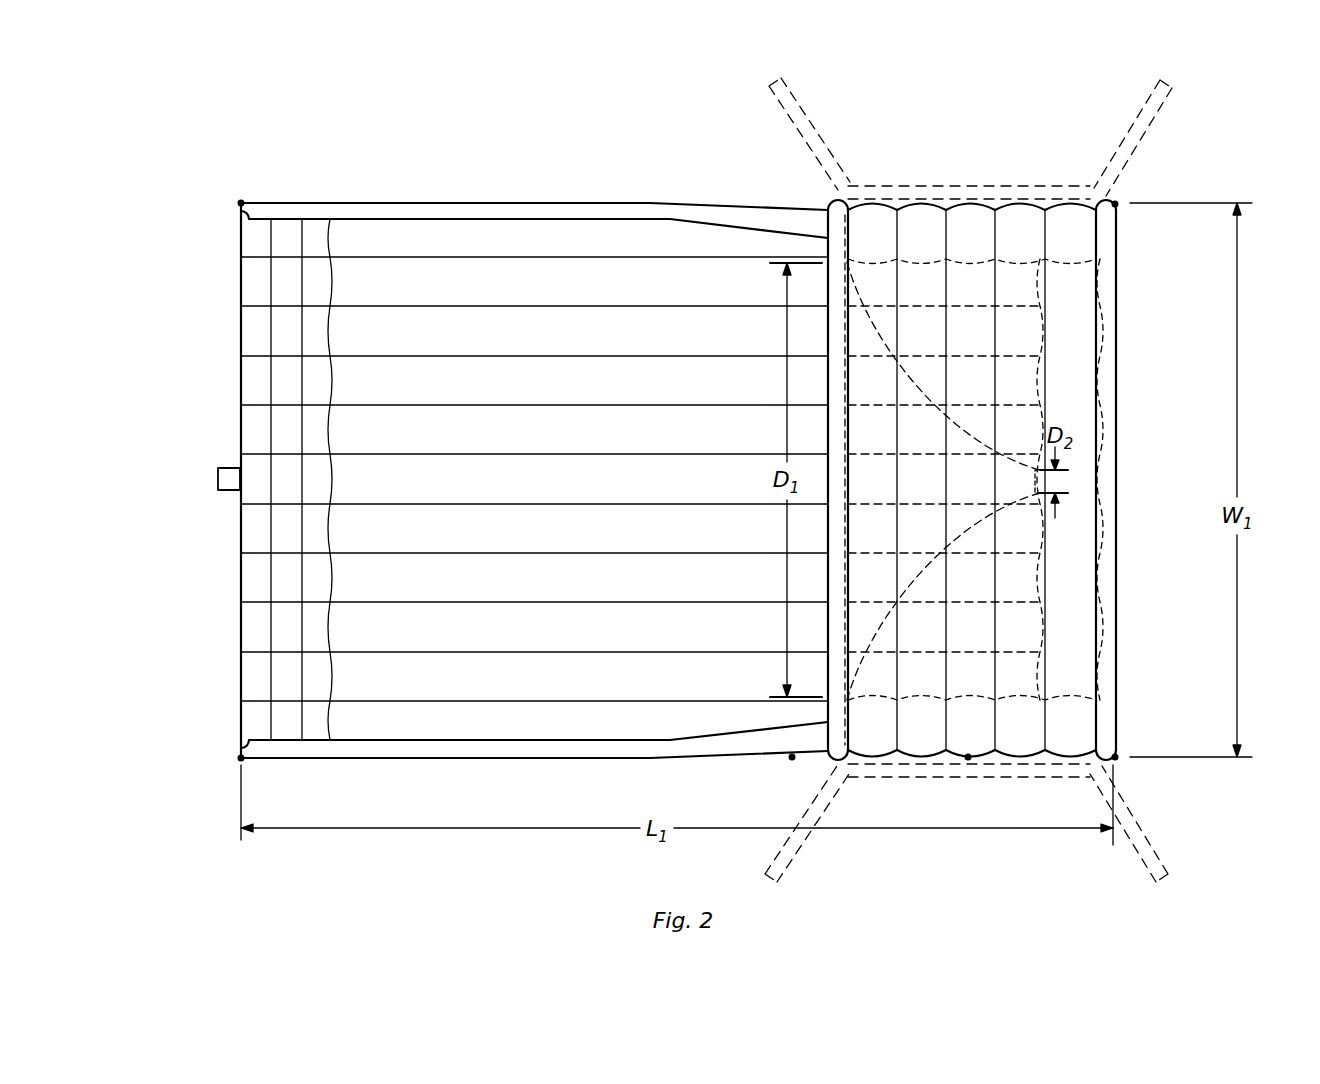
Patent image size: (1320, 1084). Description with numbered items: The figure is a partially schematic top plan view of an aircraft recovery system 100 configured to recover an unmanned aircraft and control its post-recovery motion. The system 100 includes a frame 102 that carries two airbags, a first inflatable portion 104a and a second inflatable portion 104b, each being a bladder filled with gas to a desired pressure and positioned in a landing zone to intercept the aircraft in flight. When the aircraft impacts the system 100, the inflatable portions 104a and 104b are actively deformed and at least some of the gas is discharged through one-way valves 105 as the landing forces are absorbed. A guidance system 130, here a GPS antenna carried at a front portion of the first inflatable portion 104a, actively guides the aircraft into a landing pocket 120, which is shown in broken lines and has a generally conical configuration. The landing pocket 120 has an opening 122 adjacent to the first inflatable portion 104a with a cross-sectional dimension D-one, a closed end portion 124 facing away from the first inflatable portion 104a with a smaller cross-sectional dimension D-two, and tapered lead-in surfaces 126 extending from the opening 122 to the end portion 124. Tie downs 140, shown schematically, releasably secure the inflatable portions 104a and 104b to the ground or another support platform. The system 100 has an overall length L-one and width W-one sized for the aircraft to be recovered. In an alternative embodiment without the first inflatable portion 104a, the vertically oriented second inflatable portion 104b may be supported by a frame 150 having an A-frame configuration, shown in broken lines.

The aircraft recovery system 100 is at (1005, 128).
The frame 102 is at (832, 237).
The first inflatable portion 104a is at (515, 233).
The second inflatable portion 104b is at (987, 208).
The one-way valves 105 is at (792, 757).
The landing pocket 120 is at (917, 382).
The opening 122 is at (852, 446).
The end portion 124 is at (1050, 484).
The tapered lead-in surfaces 126 is at (963, 437).
The guidance system 130 is at (215, 478).
The tie downs 140 is at (241, 203).
The frame 150 is at (808, 118).